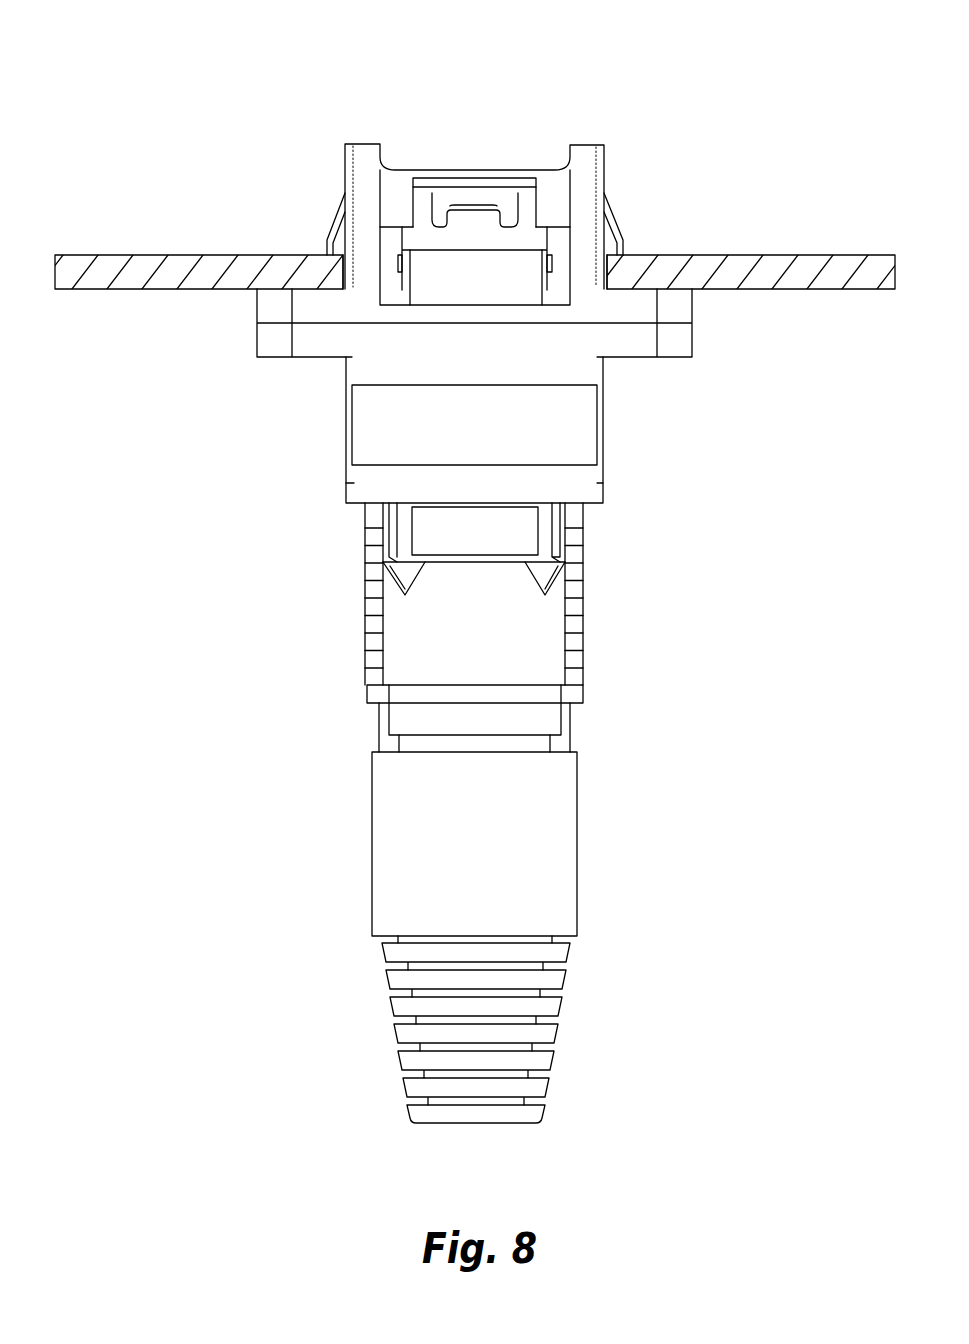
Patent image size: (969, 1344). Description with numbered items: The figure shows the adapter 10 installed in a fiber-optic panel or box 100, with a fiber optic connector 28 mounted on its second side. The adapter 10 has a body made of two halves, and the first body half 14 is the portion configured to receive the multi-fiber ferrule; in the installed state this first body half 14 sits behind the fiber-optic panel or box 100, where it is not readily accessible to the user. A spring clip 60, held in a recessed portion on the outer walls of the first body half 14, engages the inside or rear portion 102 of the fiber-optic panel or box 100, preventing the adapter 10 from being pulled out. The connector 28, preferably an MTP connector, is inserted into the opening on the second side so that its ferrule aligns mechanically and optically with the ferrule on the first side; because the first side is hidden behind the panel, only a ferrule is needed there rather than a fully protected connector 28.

The adapter 10 is at (522, 561).
The first body half 14 is at (583, 150).
The fiber optic connector 28 is at (570, 735).
The spring clip 60 is at (623, 228).
The fiber-optic panel or box 100 is at (846, 255).
The inside or rear portion 102 is at (775, 208).